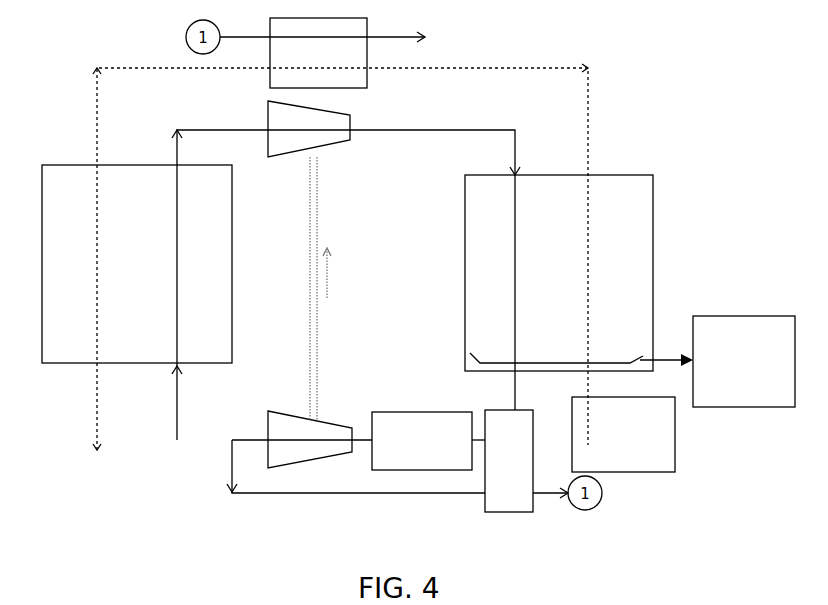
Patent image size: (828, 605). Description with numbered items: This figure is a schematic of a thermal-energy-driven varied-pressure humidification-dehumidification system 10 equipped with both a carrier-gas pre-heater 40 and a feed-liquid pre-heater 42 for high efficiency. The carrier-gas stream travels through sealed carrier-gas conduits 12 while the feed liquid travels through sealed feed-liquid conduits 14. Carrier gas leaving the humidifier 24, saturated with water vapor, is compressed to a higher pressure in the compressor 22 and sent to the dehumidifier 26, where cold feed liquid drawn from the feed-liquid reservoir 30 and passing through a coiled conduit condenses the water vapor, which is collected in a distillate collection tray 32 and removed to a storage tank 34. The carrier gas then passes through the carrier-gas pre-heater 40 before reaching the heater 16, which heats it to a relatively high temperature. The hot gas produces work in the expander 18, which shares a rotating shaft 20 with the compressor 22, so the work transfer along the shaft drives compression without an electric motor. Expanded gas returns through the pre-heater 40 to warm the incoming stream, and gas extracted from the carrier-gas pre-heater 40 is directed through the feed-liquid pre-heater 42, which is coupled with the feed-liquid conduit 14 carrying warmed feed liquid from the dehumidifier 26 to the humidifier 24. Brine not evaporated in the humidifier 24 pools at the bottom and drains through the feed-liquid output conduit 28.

The thermal-energy-driven varied-pressure humidification-dehumidification system 10 is at (62, 112).
The carrier-gas conduit 12 is at (447, 130).
The feed-liquid conduit 14 is at (465, 68).
The heater 16 is at (406, 451).
The expander 18 is at (323, 433).
The rotating shaft 20 is at (311, 232).
The compressor 22 is at (330, 124).
The humidifier 24 is at (120, 276).
The dehumidifier 26 is at (545, 284).
The feed-liquid output conduit 28 is at (97, 423).
The feed-liquid reservoir 30 is at (612, 442).
The distillate collection tray 32 is at (540, 363).
The storage tank 34 is at (732, 371).
The carrier-gas pre-heater 40 is at (495, 474).
The feed-liquid pre-heater 42 is at (306, 69).